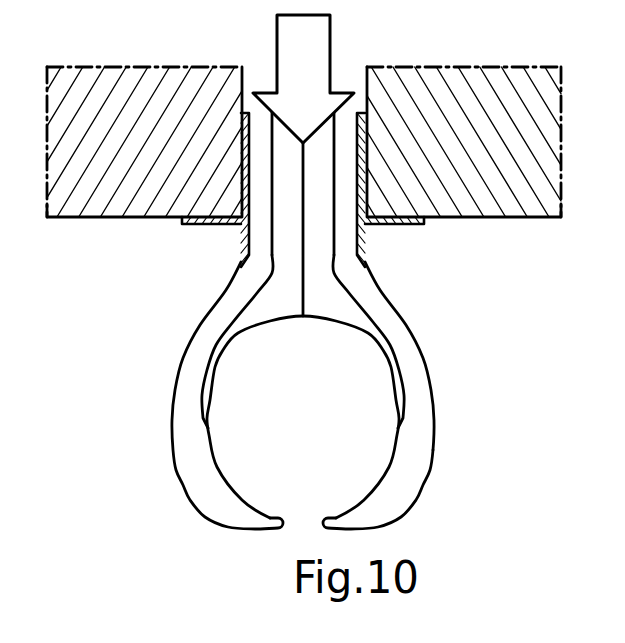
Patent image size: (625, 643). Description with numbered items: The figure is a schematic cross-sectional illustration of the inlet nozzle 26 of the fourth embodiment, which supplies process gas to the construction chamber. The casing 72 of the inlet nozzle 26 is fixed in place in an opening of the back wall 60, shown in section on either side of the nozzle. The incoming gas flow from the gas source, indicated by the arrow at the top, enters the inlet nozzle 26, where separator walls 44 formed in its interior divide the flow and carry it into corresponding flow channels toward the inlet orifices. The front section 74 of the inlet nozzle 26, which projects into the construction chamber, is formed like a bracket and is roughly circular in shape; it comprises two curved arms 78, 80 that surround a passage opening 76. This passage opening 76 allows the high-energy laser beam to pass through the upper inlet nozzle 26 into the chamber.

The inlet nozzle 26 is at (303, 331).
The separator walls 44 is at (305, 268).
The back wall 60 is at (133, 208).
The casing 72 is at (415, 335).
The front section 74 is at (452, 404).
The passage opening 76 is at (317, 422).
The curved arm 78 is at (212, 502).
The curved arm 80 is at (388, 512).